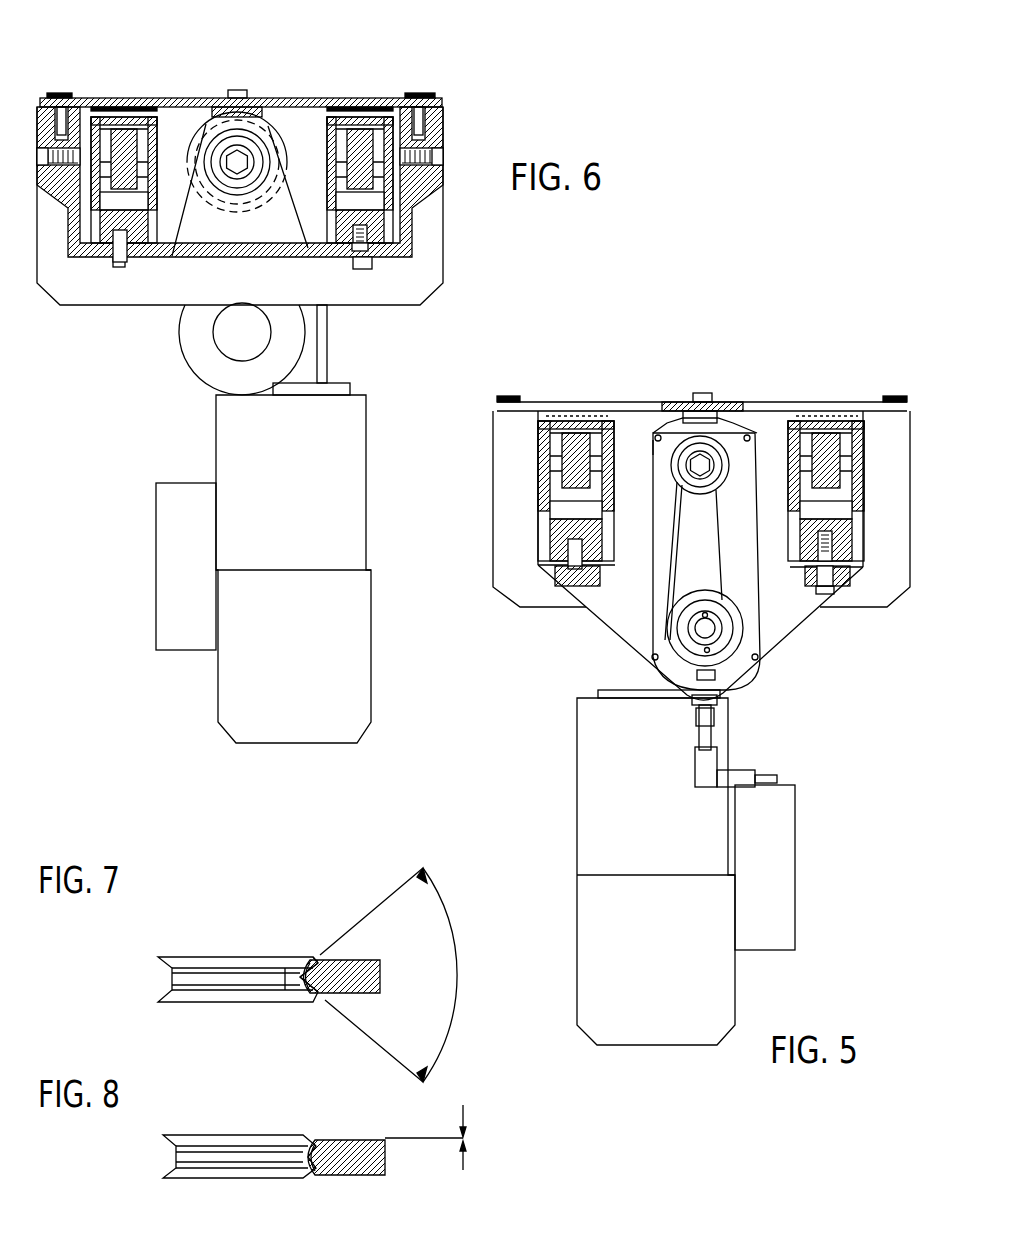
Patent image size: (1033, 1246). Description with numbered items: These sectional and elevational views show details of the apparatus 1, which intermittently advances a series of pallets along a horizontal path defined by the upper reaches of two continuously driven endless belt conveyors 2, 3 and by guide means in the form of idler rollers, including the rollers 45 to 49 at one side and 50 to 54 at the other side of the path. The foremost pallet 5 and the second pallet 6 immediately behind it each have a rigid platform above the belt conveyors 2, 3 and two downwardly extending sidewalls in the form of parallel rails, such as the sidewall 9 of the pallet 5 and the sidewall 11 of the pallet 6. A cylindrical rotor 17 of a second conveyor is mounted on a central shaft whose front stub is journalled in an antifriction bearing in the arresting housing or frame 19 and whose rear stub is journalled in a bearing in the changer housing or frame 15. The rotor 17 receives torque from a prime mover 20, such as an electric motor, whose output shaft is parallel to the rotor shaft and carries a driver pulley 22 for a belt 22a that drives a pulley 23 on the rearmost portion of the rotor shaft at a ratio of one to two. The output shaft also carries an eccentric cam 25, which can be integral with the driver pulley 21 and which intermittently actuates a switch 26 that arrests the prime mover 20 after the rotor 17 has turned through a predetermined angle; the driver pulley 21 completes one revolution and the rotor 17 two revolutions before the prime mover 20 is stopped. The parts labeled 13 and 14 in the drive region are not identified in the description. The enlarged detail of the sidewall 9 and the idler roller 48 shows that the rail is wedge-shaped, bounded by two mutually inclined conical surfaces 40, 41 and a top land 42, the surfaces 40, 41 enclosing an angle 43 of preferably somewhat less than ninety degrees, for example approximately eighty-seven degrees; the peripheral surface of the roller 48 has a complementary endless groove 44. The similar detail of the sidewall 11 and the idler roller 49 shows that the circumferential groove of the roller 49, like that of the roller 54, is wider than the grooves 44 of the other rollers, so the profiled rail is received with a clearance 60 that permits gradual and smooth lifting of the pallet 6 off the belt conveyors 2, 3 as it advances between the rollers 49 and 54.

In FIG. 6, the apparatus 1 is at (122, 86).
In FIG. 5, the apparatus 1 is at (801, 388).
In FIG. 6, the endless belt conveyor 2 is at (95, 118).
In FIG. 5, the endless belt conveyor 2 is at (825, 420).
In FIG. 6, the endless belt conveyor 3 is at (362, 110).
In FIG. 5, the endless belt conveyor 3 is at (567, 418).
In FIG. 6, the foremost pallet 5 is at (298, 98).
In FIG. 7, the foremost pallet 5 is at (363, 957).
In FIG. 5, the second pallet 6 is at (760, 404).
In FIG. 8, the second pallet 6 is at (362, 1175).
In FIG. 7, the sidewall 9 is at (328, 973).
In FIG. 8, the sidewall 11 is at (330, 1175).
In FIG. 6, the drive pulley 13 is at (205, 97).
In FIG. 5, the pulley 14 is at (700, 393).
In FIG. 5, the changer housing 15 is at (783, 617).
In FIG. 6, the cylindrical rotor 17 is at (187, 157).
In FIG. 5, the cylindrical rotor 17 is at (653, 447).
In FIG. 6, the arresting housing 19 is at (177, 260).
In FIG. 5, the arresting housing 19 is at (508, 493).
In FIG. 6, the prime mover 20 is at (223, 518).
In FIG. 5, the prime mover 20 is at (592, 765).
In FIG. 5, the driver pulley 21 is at (690, 680).
In FIG. 5, the driver pulley 22 is at (668, 630).
In FIG. 5, the belt 22a is at (670, 560).
In FIG. 5, the pulley 23 is at (680, 460).
In FIG. 5, the eccentric cam 25 is at (717, 665).
In FIG. 5, the switch 26 is at (723, 735).
In FIG. 7, the conical surface 40 is at (332, 960).
In FIG. 7, the conical surface 41 is at (325, 1000).
In FIG. 7, the top land 42 is at (293, 955).
In FIG. 7, the angle 43 is at (458, 973).
In FIG. 7, the endless groove 44 is at (288, 988).
In FIG. 6, the idler roller 45 is at (432, 97).
In FIG. 7, the idler roller 48 is at (158, 978).
In FIG. 5, the idler roller 49 is at (500, 398).
In FIG. 8, the idler roller 49 is at (165, 1157).
In FIG. 6, the idler roller 50 is at (46, 97).
In FIG. 5, the idler roller 54 is at (893, 398).
In FIG. 8, the clearance 60 is at (466, 1136).